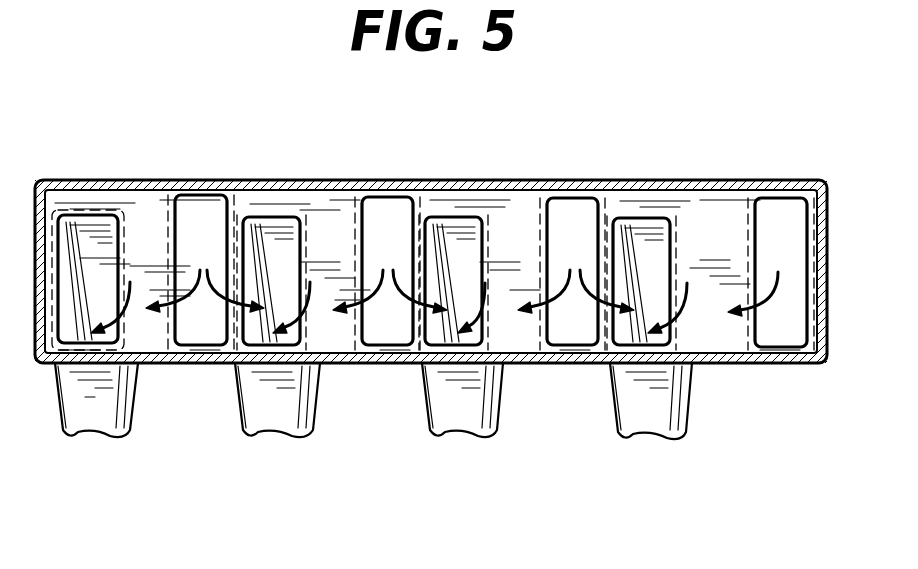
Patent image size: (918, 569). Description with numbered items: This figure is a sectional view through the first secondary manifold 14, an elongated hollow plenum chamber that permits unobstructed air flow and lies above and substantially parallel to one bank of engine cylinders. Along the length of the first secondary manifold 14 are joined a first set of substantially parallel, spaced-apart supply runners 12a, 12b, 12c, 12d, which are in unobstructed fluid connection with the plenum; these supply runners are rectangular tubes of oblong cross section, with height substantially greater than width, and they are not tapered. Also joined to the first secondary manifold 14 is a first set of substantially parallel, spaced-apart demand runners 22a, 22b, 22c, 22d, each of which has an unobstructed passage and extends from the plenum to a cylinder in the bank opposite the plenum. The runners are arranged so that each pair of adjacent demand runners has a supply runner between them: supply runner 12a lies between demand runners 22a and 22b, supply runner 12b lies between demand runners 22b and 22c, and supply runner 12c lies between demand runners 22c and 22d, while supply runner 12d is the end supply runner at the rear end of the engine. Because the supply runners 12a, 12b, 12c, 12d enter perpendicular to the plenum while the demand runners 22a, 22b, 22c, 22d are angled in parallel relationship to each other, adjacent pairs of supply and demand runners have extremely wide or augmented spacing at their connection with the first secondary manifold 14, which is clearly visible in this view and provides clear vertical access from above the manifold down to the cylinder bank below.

The first secondary manifold 14 is at (703, 355).
The supply runner 12a is at (778, 218).
The supply runner 12b is at (573, 215).
The supply runner 12c is at (383, 215).
The supply runner 12d is at (197, 215).
The demand runner 22a is at (642, 418).
The demand runner 22b is at (445, 418).
The demand runner 22c is at (260, 418).
The demand runner 22d is at (82, 418).